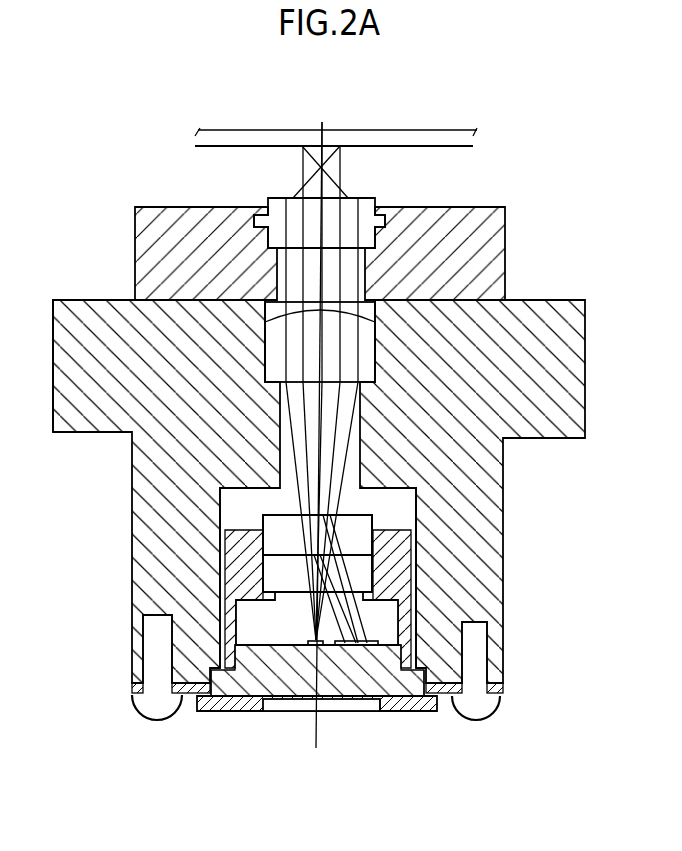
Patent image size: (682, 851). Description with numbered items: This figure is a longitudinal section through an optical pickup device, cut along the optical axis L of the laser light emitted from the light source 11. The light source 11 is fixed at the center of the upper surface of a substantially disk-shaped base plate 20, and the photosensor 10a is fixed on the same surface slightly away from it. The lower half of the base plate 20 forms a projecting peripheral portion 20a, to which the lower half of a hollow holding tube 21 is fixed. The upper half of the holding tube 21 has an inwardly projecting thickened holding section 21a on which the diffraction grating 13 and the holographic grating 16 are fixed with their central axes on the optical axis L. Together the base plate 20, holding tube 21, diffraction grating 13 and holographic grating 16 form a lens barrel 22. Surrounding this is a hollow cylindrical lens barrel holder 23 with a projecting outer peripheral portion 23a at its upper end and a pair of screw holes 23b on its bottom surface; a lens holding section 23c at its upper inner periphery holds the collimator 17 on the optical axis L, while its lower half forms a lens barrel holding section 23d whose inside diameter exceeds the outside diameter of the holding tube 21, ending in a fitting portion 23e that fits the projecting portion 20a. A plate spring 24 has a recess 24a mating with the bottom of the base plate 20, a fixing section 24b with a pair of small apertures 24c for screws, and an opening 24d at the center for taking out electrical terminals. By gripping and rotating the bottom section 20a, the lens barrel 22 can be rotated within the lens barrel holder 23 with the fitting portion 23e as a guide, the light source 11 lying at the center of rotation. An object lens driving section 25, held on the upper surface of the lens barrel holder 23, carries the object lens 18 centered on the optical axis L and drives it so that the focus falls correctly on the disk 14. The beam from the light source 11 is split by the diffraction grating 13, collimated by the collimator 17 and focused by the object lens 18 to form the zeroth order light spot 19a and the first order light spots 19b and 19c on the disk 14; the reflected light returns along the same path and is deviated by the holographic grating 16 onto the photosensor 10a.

The disk 14 is at (462, 142).
The object lens 18 is at (367, 214).
The zeroth order light spot 19a is at (327, 130).
The first order light spot 19b is at (345, 136).
The first order light spot 19c is at (302, 143).
The object lens driving section 25 is at (150, 244).
The lens barrel holder 23 is at (153, 462).
The projecting outer peripheral portion 23a is at (70, 305).
The lens holding section 23c is at (262, 352).
The lens barrel holding section 23d is at (228, 515).
The screw holes 23b is at (140, 643).
The fitting portion 23e is at (217, 712).
The collimator 17 is at (362, 348).
The holographic grating 16 is at (405, 515).
The lens barrel 22 is at (222, 577).
The holding tube 21 is at (395, 602).
The thickened holding section 21a is at (400, 547).
The diffraction grating 13 is at (385, 580).
The light source 11 is at (310, 647).
The photosensor 10a is at (343, 646).
The base plate 20 is at (387, 703).
The projecting peripheral portion 20a is at (417, 705).
The plate spring 24 is at (198, 713).
The recess 24a is at (243, 713).
The fixing section 24b is at (185, 713).
The small apertures 24c is at (128, 690).
The opening 24d is at (350, 703).
The optical axis L is at (317, 745).